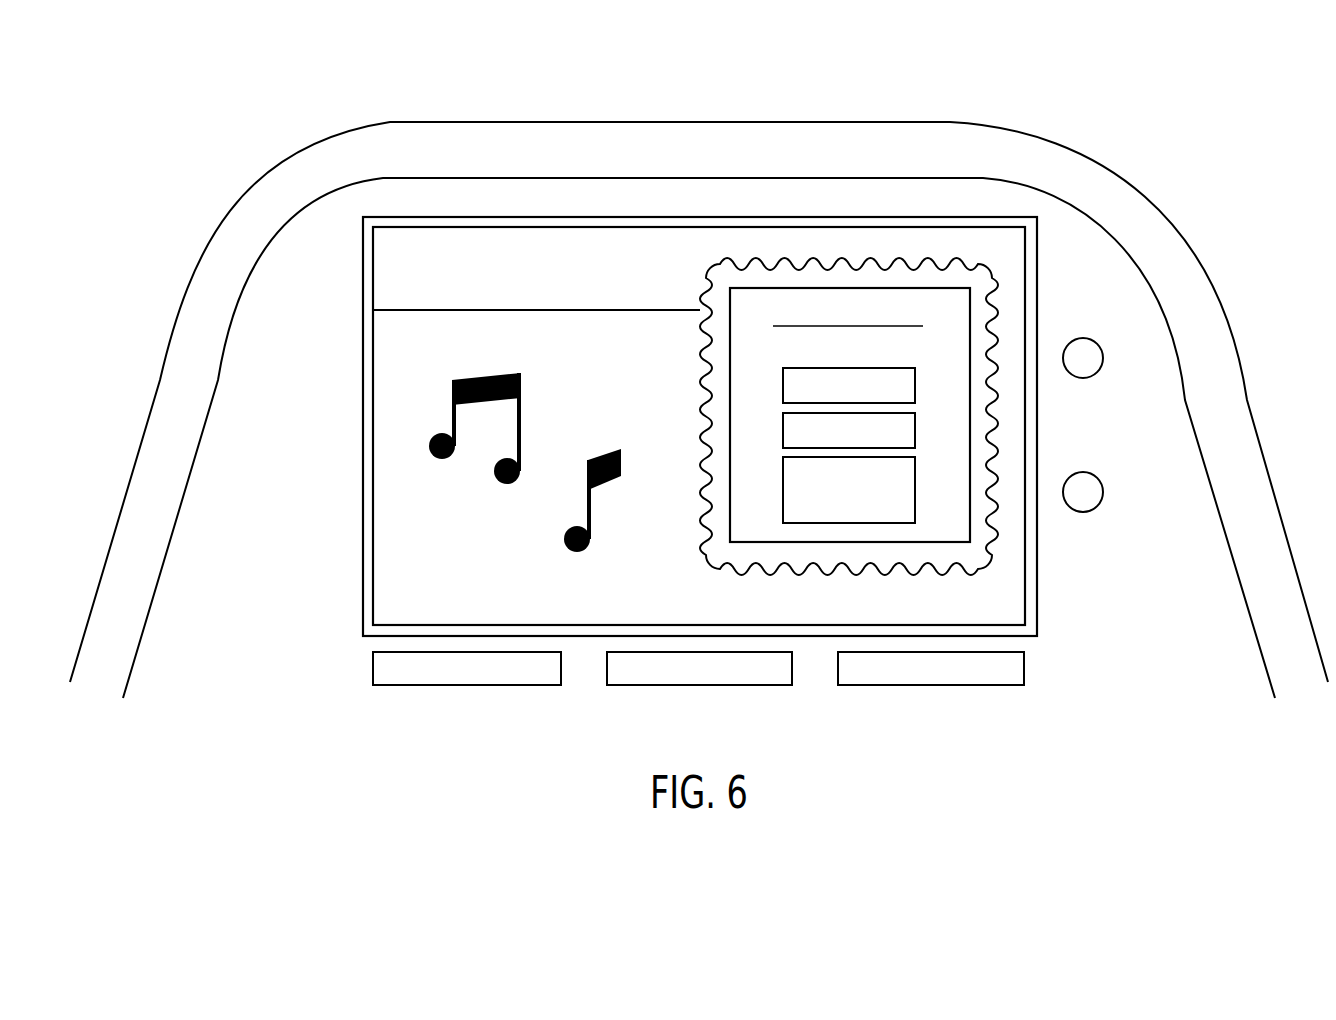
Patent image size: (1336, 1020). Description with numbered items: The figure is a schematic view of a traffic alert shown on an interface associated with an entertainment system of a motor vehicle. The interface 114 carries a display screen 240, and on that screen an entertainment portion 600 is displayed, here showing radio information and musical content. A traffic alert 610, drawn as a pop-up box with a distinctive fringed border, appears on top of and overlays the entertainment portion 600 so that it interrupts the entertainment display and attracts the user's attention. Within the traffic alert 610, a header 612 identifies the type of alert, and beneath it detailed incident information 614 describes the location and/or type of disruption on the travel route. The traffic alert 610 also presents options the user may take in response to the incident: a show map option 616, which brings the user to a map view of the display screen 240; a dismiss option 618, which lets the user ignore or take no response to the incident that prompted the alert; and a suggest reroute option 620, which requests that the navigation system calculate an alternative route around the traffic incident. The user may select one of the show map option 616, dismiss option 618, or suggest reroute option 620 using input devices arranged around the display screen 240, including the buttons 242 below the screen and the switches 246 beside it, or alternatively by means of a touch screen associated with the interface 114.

The interface 114 is at (776, 210).
The display screen 240 is at (1006, 240).
The buttons 242 is at (1086, 671).
The switches 246 is at (1103, 366).
The entertainment portion 600 is at (403, 390).
The traffic alert 610 is at (928, 258).
The header 612 is at (952, 322).
The detailed incident information 614 is at (950, 349).
The show map option 616 is at (928, 388).
The dismiss option 618 is at (930, 431).
The suggest reroute option 620 is at (928, 489).